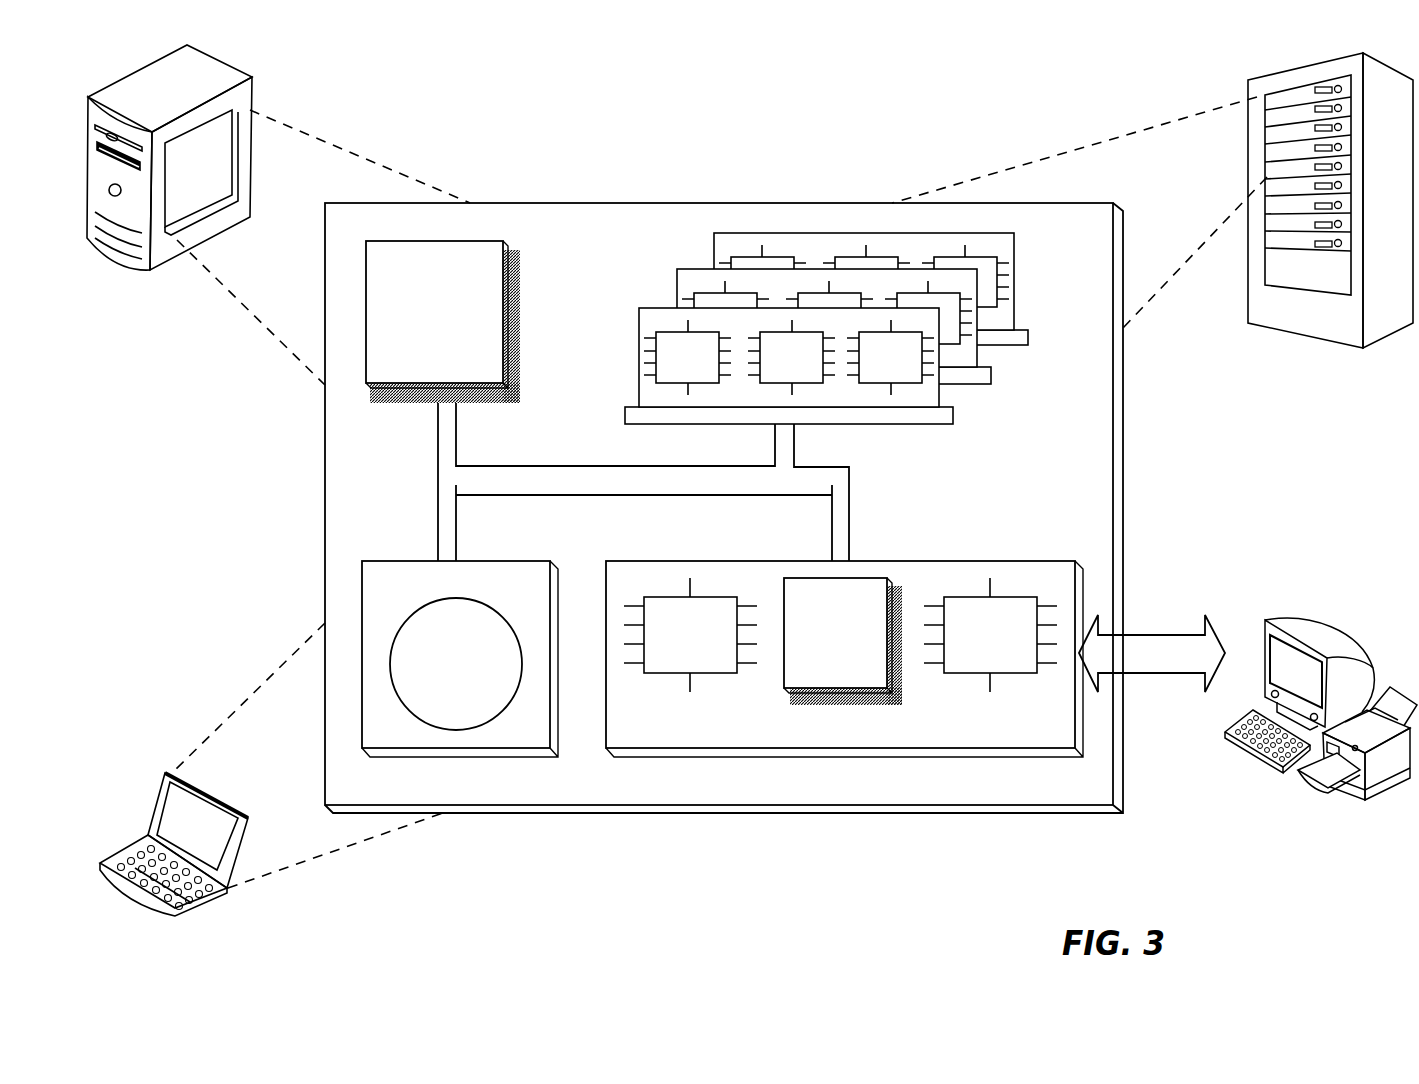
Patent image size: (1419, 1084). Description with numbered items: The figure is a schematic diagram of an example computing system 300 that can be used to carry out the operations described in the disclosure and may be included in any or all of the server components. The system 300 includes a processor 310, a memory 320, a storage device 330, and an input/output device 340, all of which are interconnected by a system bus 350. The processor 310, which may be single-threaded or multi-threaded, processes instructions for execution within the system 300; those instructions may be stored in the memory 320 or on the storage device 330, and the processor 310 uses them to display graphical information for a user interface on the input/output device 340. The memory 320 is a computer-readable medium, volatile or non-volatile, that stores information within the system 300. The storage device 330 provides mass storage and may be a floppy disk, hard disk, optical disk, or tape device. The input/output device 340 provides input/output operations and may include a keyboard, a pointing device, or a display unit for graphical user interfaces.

The computing system 300 is at (534, 114).
The processor 310 is at (458, 376).
The memory 320 is at (1026, 390).
The storage device 330 is at (506, 741).
The input/output device 340 is at (1265, 628).
The system bus 350 is at (638, 485).